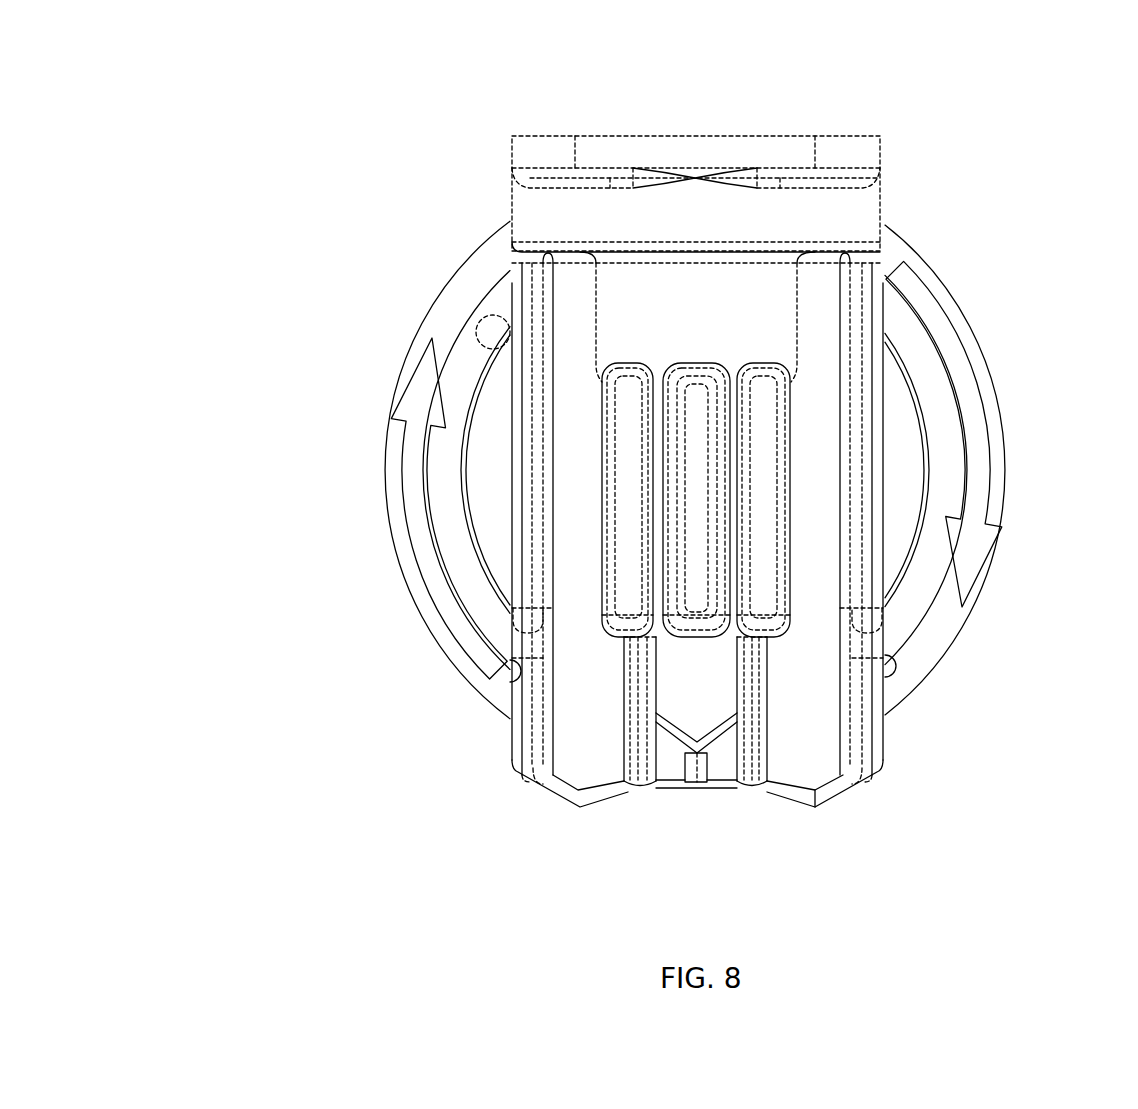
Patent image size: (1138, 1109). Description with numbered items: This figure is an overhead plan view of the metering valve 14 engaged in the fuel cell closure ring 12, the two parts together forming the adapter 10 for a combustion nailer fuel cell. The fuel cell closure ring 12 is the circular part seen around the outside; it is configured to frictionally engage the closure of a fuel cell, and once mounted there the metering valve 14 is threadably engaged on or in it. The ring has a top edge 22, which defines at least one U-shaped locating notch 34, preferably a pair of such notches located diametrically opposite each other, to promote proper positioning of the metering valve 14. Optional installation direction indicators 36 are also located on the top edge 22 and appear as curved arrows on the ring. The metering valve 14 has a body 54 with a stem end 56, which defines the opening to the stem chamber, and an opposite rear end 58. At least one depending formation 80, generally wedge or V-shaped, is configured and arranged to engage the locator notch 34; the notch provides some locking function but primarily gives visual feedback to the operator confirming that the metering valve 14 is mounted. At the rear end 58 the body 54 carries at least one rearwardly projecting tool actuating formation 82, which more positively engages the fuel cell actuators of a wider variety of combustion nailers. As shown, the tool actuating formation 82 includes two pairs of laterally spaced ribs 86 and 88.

The adapter 10 is at (297, 284).
The fuel cell closure ring 12 is at (1016, 427).
The metering valve 14 is at (897, 250).
The top edge 22 is at (463, 290).
The locating notch 34 is at (695, 780).
The installation direction indicators 36 is at (410, 468).
The body 54 is at (600, 521).
The stem end 56 is at (553, 136).
The rear end 58 is at (682, 511).
The depending formation 80 is at (690, 753).
The tool actuating formation 82 is at (578, 806).
The ribs 86 is at (528, 700).
The ribs 88 is at (643, 738).